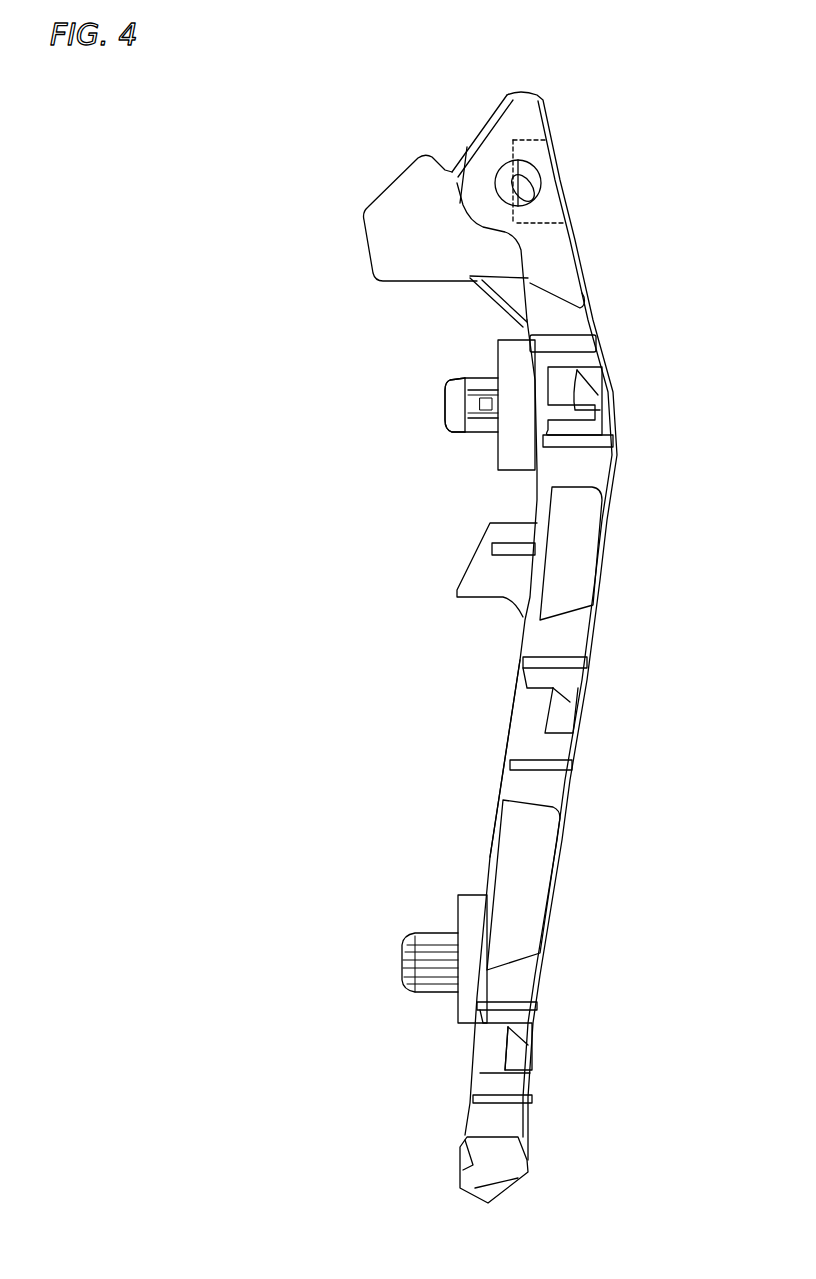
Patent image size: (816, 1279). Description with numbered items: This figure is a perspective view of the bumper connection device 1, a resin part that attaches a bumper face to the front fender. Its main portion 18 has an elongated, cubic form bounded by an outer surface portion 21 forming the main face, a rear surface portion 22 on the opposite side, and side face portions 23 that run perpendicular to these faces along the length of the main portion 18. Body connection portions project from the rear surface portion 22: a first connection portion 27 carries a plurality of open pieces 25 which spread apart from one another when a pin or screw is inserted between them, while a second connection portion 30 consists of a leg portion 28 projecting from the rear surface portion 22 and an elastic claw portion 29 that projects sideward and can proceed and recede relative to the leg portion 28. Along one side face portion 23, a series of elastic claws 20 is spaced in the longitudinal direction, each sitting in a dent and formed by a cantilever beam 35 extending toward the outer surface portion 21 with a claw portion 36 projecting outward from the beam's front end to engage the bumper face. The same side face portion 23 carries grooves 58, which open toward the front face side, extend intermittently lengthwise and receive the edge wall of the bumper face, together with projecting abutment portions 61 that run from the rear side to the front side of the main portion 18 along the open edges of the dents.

The bumper connection device 1 is at (628, 108).
The main portion 18 is at (580, 242).
The elastic claw 20 is at (614, 388).
The outer surface portion 21 is at (530, 1133).
The rear surface portion 22 is at (497, 789).
The side face portion 23 is at (533, 640).
The open piece 25 is at (413, 968).
The first connection portion 27 is at (393, 940).
The leg portion 28 is at (452, 395).
The claw portion 29 is at (482, 408).
The second connection portion 30 is at (380, 378).
The beam 35 is at (538, 700).
The claw portion 36 is at (565, 712).
The groove 58 is at (580, 568).
The projecting abutment portion 61 is at (588, 342).